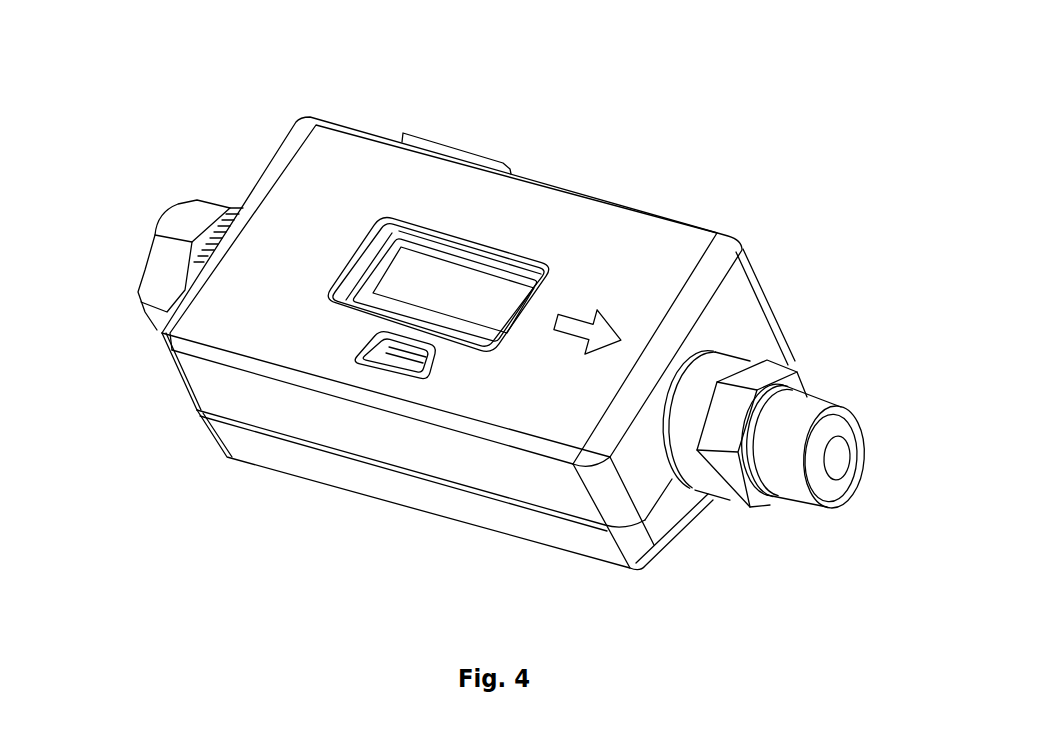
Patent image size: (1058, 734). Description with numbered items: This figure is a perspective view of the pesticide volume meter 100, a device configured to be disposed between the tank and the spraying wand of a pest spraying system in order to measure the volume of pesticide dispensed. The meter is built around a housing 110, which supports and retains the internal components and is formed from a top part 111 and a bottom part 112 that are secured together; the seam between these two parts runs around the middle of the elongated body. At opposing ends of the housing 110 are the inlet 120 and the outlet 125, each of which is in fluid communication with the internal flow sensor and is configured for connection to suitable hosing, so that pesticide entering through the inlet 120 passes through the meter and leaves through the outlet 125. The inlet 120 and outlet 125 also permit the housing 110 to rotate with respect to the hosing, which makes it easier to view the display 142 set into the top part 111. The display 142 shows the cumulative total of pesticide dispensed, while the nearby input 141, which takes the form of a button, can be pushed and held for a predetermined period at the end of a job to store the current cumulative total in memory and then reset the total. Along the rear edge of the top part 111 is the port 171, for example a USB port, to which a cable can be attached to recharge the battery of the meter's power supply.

The pesticide volume meter 100 is at (622, 98).
The housing 110 is at (740, 250).
The top part 111 is at (647, 245).
The bottom part 112 is at (670, 543).
The inlet 120 is at (193, 222).
The outlet 125 is at (800, 423).
The input 141 is at (386, 372).
The display 142 is at (406, 280).
The port 171 is at (457, 157).